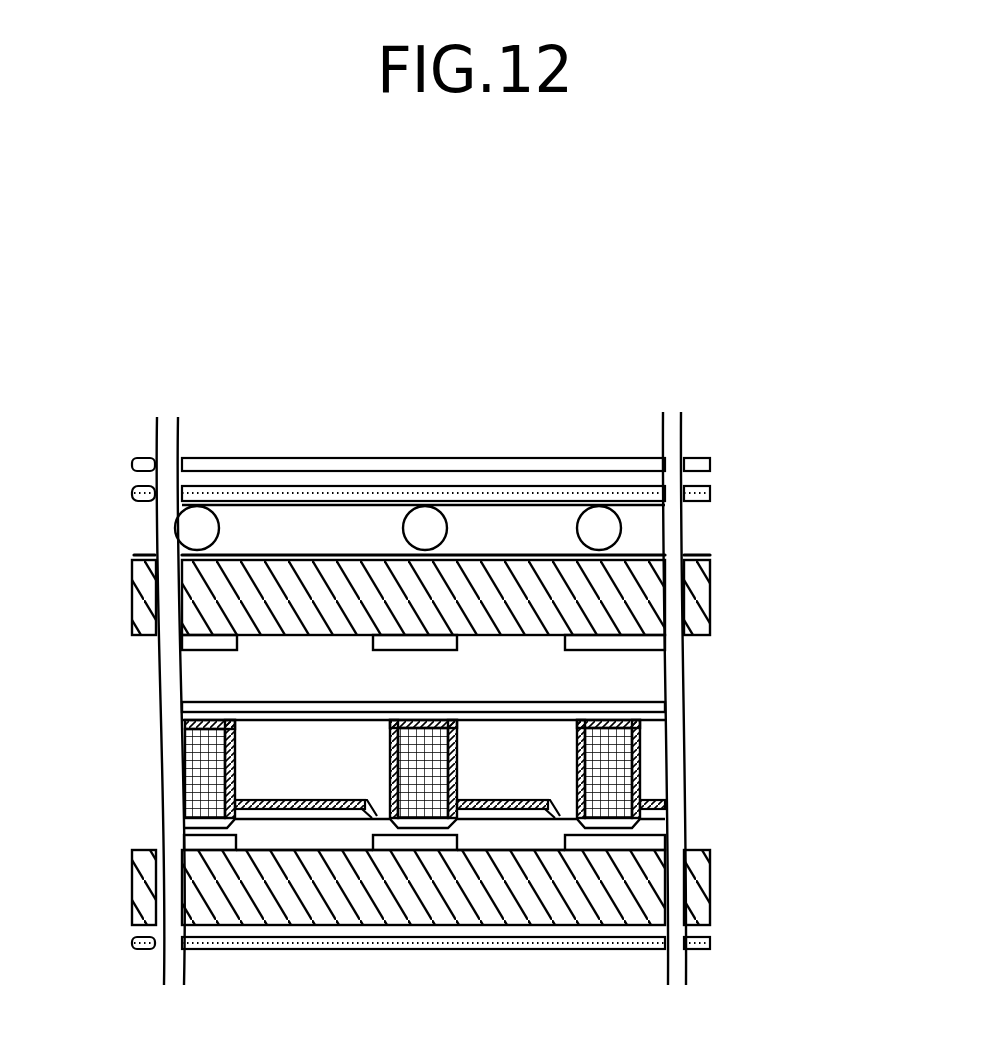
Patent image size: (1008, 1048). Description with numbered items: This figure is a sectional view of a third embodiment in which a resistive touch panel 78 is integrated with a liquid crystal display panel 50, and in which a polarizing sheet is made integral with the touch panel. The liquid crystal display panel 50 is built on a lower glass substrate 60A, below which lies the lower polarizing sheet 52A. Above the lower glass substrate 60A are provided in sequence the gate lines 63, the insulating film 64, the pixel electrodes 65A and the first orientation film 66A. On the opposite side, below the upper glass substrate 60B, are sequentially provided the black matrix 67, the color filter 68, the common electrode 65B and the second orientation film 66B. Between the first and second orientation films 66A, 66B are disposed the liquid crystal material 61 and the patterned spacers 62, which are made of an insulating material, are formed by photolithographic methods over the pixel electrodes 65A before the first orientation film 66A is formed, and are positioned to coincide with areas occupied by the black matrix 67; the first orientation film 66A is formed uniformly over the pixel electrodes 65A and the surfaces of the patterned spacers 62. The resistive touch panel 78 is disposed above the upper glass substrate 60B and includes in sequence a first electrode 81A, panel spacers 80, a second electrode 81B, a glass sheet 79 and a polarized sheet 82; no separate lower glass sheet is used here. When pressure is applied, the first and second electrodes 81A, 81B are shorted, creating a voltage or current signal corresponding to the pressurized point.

The resistive touch panel 78 is at (98, 530).
The liquid crystal display panel 50 is at (98, 812).
The polarized sheet 82 is at (710, 458).
The glass sheet 79 is at (713, 480).
The second electrode 81B is at (713, 497).
The panel spacers 80 is at (621, 525).
The first electrode 81A is at (712, 553).
The upper glass substrate 60B is at (712, 596).
The black matrix 67 is at (710, 636).
The color filter 68 is at (658, 672).
The common electrode 65B is at (662, 703).
The second orientation film 66B is at (662, 712).
The patterned spacers 62 is at (390, 770).
The liquid crystal material 61 is at (662, 747).
The first orientation film 66A is at (658, 803).
The pixel electrodes 65A is at (662, 812).
The insulating film 64 is at (662, 826).
The gate lines 63 is at (662, 836).
The lower glass substrate 60A is at (710, 885).
The lower polarizing sheet 52A is at (712, 940).